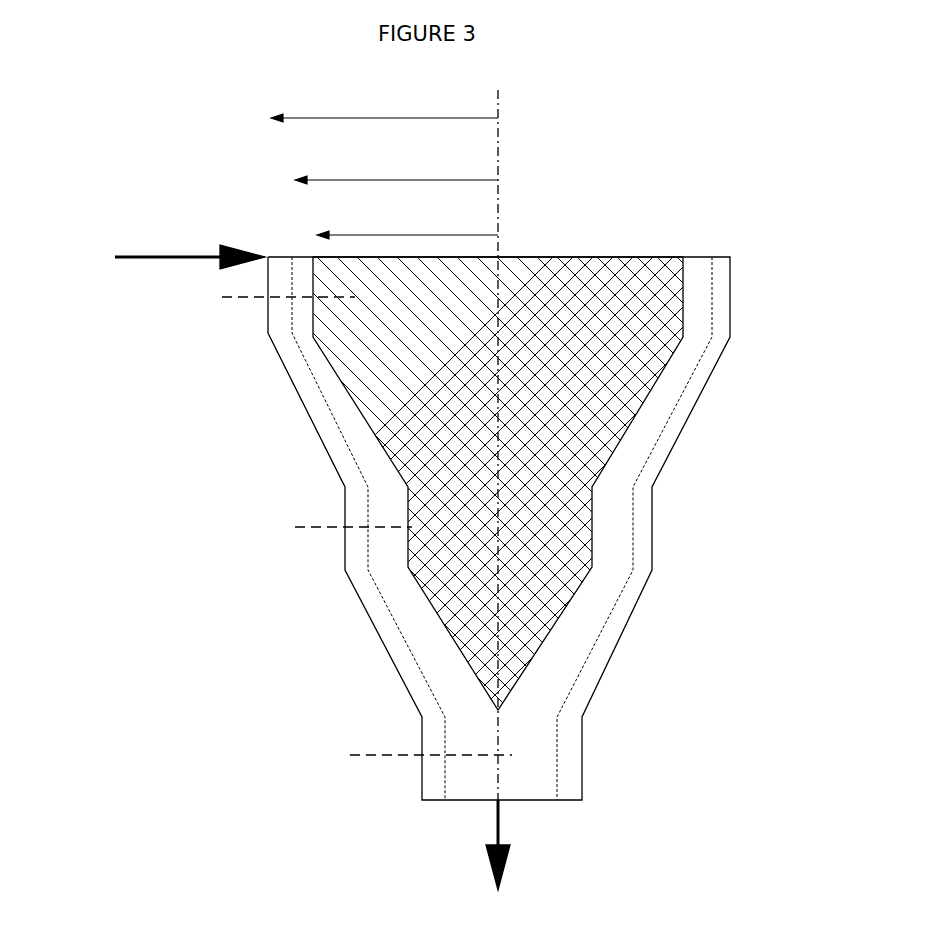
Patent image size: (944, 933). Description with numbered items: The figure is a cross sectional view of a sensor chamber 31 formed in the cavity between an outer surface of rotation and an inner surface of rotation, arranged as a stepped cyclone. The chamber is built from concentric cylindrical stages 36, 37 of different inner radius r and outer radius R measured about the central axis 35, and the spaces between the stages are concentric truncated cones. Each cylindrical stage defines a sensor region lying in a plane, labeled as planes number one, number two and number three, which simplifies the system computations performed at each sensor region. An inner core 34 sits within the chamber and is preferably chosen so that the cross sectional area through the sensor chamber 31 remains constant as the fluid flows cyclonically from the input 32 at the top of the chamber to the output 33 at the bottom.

The sensor chamber 31 is at (746, 286).
The input 32 is at (152, 241).
The output 33 is at (517, 838).
The inner core 34 is at (584, 239).
The axis 35 is at (516, 126).
The concentric cylindrical stage 36 is at (279, 305).
The concentric cylindrical stage 37 is at (371, 517).